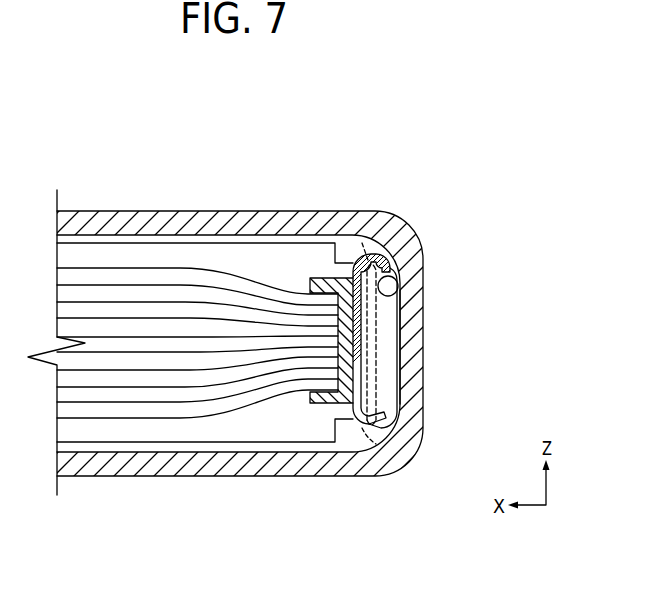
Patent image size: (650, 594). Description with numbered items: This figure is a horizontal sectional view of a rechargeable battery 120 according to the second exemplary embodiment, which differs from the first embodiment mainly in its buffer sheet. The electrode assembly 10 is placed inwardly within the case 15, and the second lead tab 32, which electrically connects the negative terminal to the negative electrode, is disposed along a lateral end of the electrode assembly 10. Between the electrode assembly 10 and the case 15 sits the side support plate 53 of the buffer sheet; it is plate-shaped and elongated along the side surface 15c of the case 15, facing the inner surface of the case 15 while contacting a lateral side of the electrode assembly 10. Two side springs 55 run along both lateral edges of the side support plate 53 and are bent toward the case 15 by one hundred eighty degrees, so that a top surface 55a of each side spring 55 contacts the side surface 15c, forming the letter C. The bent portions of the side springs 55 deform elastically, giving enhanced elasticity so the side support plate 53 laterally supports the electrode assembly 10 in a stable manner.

The rechargeable battery 120 is at (112, 158).
The case 15 is at (195, 212).
The side surface of the case 15c is at (398, 372).
The electrode assembly 10 is at (282, 281).
The second lead tab 32 is at (330, 400).
The side support plate 53 is at (362, 333).
The side spring 55 is at (397, 293).
The top surface of the side spring 55a is at (410, 242).